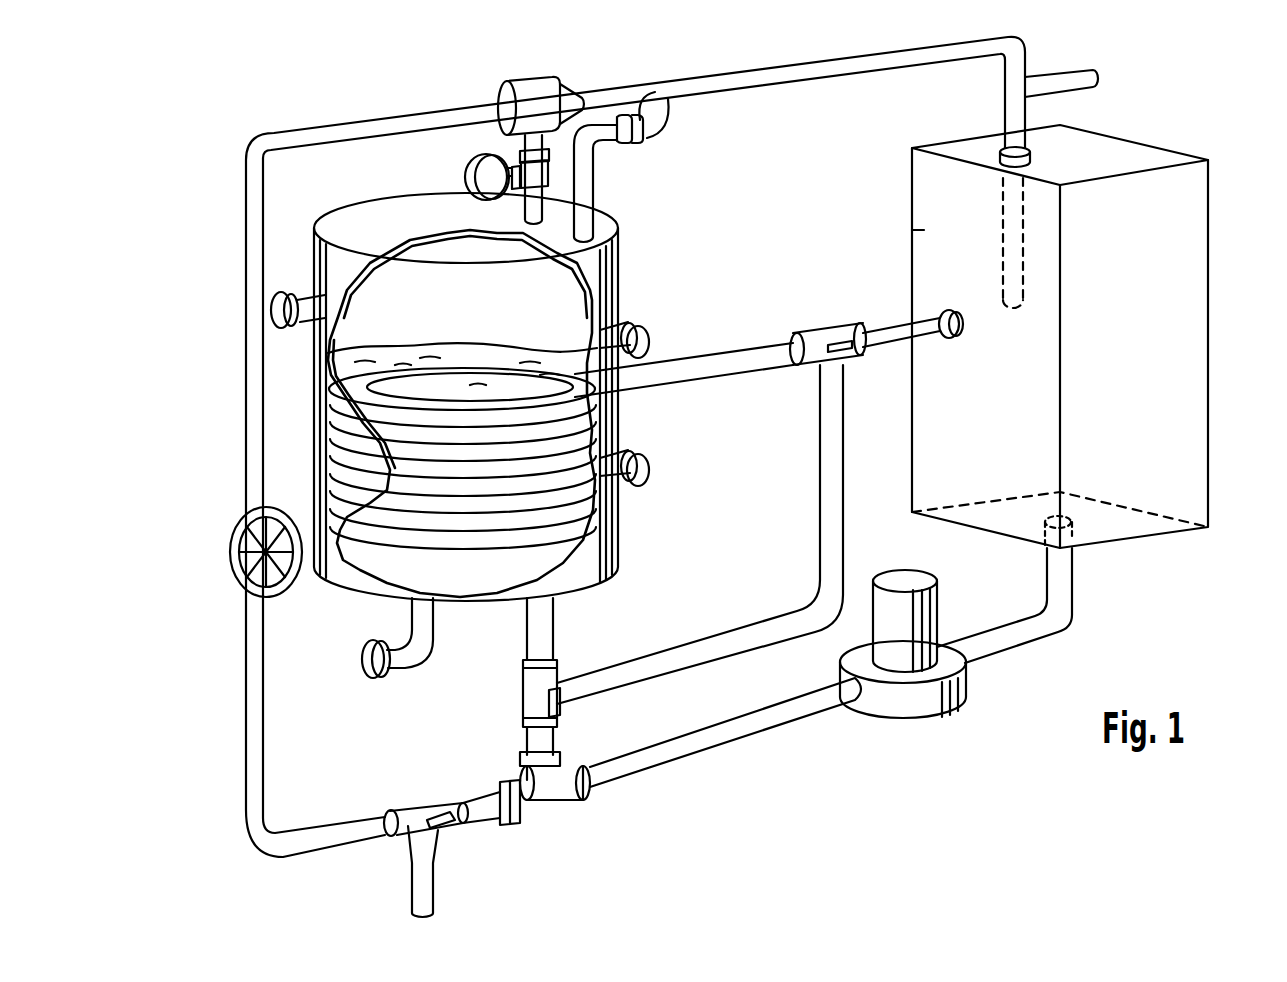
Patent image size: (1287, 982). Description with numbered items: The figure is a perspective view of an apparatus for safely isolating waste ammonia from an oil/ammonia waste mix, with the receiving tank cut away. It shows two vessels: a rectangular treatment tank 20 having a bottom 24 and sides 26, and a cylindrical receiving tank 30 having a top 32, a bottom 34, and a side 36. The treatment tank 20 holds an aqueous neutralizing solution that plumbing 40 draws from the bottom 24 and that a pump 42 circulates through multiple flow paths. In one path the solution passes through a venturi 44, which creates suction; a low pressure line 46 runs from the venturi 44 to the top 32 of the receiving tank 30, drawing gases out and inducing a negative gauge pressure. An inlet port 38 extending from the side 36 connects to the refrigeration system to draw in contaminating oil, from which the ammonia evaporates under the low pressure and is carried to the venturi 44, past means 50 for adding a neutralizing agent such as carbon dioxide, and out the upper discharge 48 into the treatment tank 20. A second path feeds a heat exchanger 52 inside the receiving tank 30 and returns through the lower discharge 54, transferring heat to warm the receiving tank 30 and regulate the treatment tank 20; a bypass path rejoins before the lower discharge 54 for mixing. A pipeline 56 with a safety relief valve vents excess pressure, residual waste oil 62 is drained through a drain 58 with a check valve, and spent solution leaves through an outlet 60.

The treatment tank 20 is at (1208, 435).
The bottom 24 is at (1125, 541).
The sides 26 is at (918, 230).
The receiving tank 30 is at (610, 222).
The top 32 is at (380, 207).
The bottom 34 is at (571, 596).
The side 36 is at (620, 307).
The inlet port 38 is at (308, 293).
The plumbing 40 is at (1060, 622).
The pump 42 is at (917, 720).
The venturi 44 is at (537, 86).
The low pressure line 46 is at (517, 142).
The upper discharge 48 is at (1015, 233).
The means for adding a neutralizing agent 50 is at (1052, 77).
The heat exchanger 52 is at (487, 542).
The lower discharge 54 is at (963, 317).
The pipeline 56 is at (640, 147).
The drain 58 is at (410, 650).
The outlet 60 is at (430, 883).
The waste oil 62 is at (393, 342).